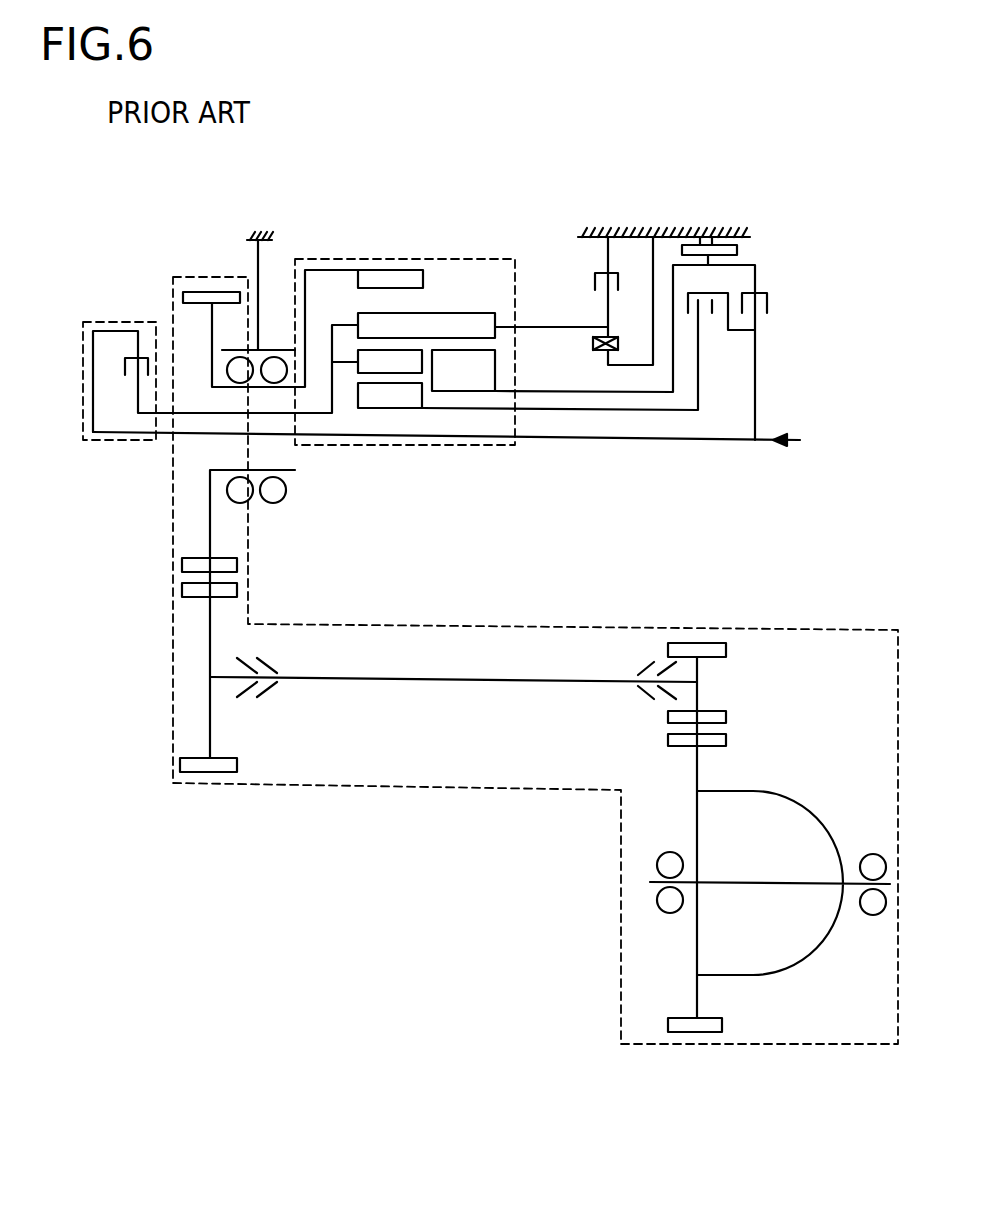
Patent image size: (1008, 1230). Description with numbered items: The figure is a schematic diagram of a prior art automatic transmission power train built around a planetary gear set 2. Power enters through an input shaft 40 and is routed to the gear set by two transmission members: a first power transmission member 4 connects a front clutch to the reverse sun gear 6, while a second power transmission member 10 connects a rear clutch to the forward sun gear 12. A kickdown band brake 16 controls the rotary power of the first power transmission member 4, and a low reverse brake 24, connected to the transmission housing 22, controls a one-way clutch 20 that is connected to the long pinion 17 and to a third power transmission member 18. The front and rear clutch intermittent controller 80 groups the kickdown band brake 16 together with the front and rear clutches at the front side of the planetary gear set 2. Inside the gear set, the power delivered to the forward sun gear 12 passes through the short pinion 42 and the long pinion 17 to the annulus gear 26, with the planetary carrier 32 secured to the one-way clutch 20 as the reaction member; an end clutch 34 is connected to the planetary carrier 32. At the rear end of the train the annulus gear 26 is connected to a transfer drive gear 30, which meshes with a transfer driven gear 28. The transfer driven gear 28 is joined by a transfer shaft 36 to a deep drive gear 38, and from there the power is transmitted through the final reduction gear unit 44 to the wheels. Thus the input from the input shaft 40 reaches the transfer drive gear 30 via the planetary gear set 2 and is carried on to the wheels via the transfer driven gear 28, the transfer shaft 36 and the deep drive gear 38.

The planetary gear set 2 is at (462, 259).
The first power transmission member 4 is at (673, 382).
The reverse sun gear 6 is at (465, 387).
The second power transmission member 10 is at (605, 410).
The forward sun gear 12 is at (407, 402).
The kickdown band brake 16 is at (695, 237).
The long pinion 17 is at (408, 313).
The third power transmission member 18 is at (535, 327).
The one-way clutch 20 is at (600, 337).
The transmission housing 22 is at (738, 233).
The low reverse brake 24 is at (582, 228).
The annulus gear 26 is at (375, 270).
The transfer driven gear 28 is at (185, 762).
The transfer drive gear 30 is at (185, 563).
The planetary carrier 32 is at (333, 340).
The end clutch 34 is at (126, 322).
The transfer shaft 36 is at (405, 682).
The deep drive gear 38 is at (720, 740).
The input shaft 40 is at (678, 440).
The short pinion 42 is at (372, 368).
The final reduction gear unit 44 is at (620, 900).
The front and rear clutch intermittent controller 80 is at (767, 303).